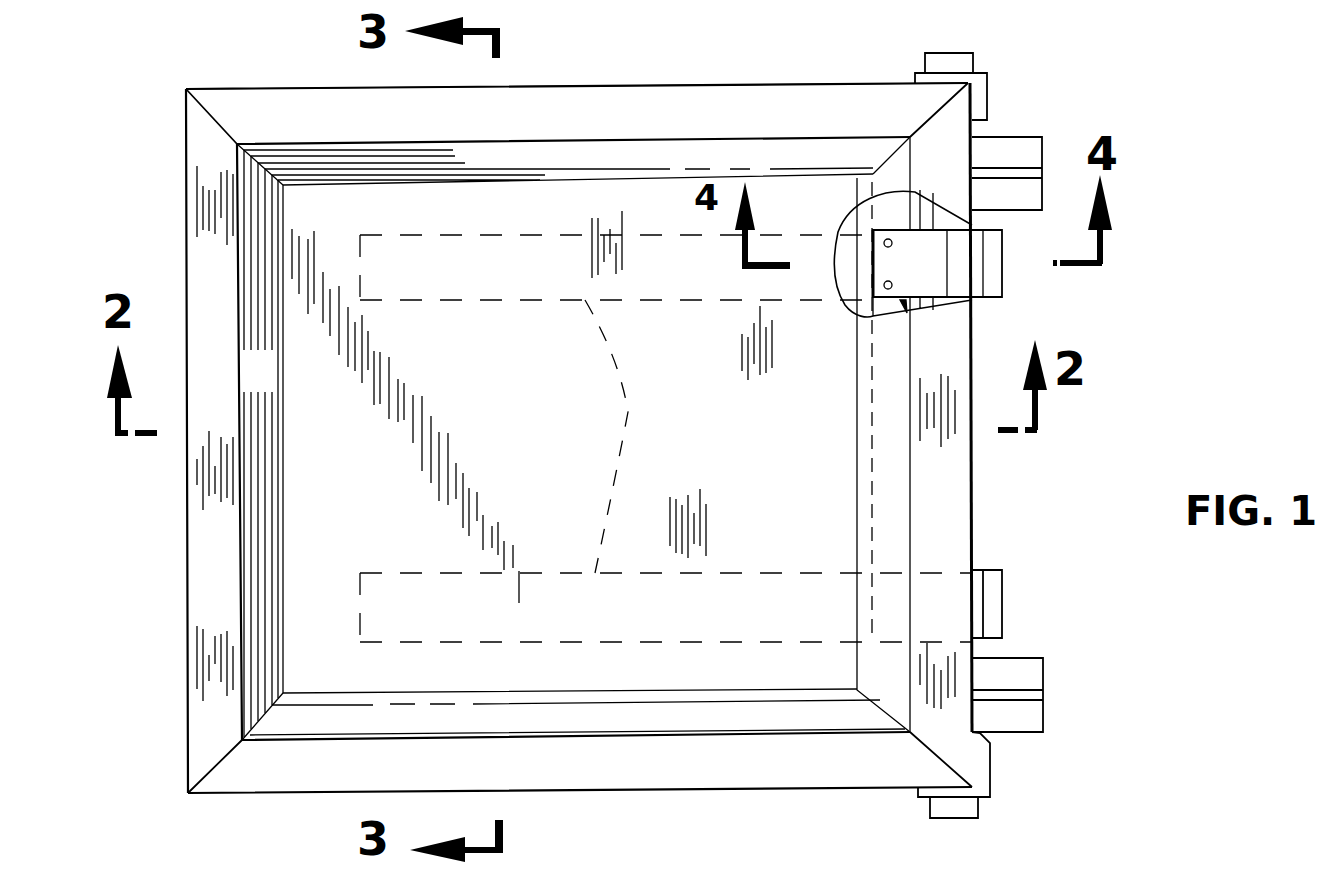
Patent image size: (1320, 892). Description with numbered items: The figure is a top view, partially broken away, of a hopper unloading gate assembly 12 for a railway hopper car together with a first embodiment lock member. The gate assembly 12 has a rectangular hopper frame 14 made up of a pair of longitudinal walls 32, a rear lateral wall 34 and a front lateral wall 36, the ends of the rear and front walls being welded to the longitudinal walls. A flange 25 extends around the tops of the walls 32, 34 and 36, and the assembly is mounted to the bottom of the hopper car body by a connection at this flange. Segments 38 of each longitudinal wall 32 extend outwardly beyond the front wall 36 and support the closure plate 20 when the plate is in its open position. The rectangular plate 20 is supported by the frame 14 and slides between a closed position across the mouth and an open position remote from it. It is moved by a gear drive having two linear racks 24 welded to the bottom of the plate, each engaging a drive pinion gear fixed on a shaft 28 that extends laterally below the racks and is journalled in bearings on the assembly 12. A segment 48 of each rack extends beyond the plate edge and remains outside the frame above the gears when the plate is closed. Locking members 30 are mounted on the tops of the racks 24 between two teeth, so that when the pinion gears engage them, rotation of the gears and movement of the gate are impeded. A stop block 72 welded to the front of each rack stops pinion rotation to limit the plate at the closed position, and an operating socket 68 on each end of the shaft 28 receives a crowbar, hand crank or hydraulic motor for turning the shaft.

The gate assembly 12 is at (1163, 384).
The hopper frame 14 is at (1000, 509).
The closure plate 20 is at (544, 436).
The linear racks 24 is at (976, 268).
The flange 25 is at (580, 115).
The shaft 28 is at (993, 297).
The locking members 30 is at (924, 268).
The longitudinal walls 32 is at (620, 167).
The rear lateral wall 34 is at (260, 442).
The front lateral wall 36 is at (904, 487).
The segments of longitudinal wall 38 is at (1008, 137).
The rack segment 48 is at (910, 320).
The operating socket 68 is at (977, 82).
The stop block 72 is at (990, 277).